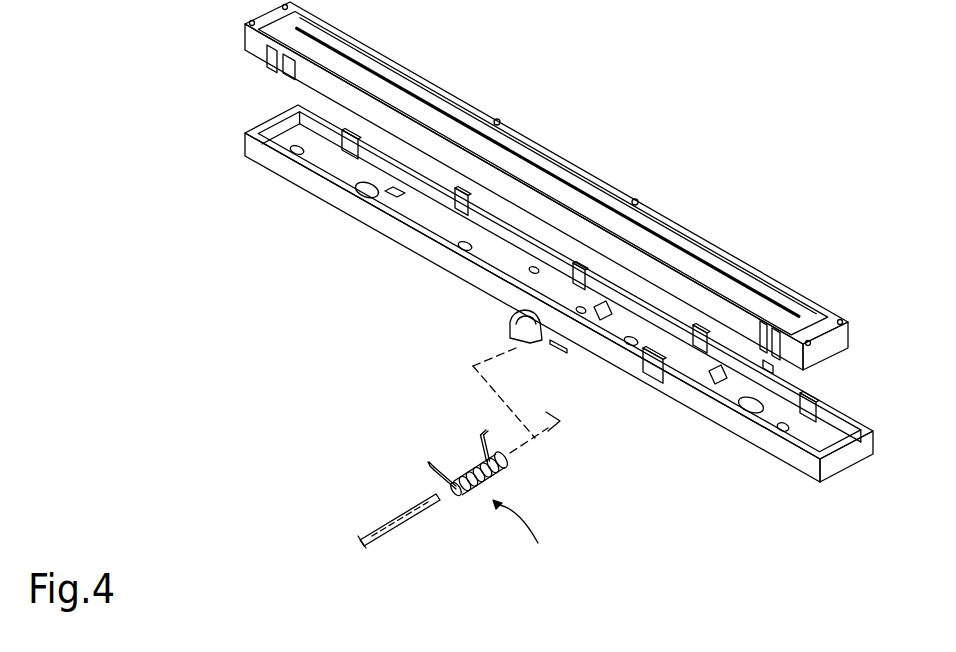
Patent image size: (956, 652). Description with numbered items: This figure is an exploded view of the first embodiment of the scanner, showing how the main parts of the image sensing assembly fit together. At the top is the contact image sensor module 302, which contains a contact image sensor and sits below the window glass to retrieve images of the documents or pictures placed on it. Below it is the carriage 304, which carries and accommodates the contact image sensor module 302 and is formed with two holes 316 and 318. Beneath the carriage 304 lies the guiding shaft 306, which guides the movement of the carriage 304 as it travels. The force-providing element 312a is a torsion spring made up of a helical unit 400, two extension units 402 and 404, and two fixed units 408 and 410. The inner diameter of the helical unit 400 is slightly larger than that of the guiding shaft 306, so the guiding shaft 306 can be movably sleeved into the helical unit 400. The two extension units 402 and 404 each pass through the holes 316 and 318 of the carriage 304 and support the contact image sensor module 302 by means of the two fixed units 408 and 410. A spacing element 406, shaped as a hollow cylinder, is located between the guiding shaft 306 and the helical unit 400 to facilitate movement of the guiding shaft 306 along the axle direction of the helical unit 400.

The contact image sensor module 302 is at (716, 278).
The carriage 304 is at (280, 128).
The guiding shaft 306 is at (392, 530).
The hole 316 is at (580, 316).
The hole 318 is at (530, 271).
The helical unit 400 is at (467, 468).
The extension unit 402 is at (482, 437).
The extension unit 404 is at (447, 494).
The spacing element 406 is at (457, 494).
The fixed unit 408 is at (483, 432).
The fixed unit 410 is at (432, 468).
The force-providing element 312a is at (532, 535).